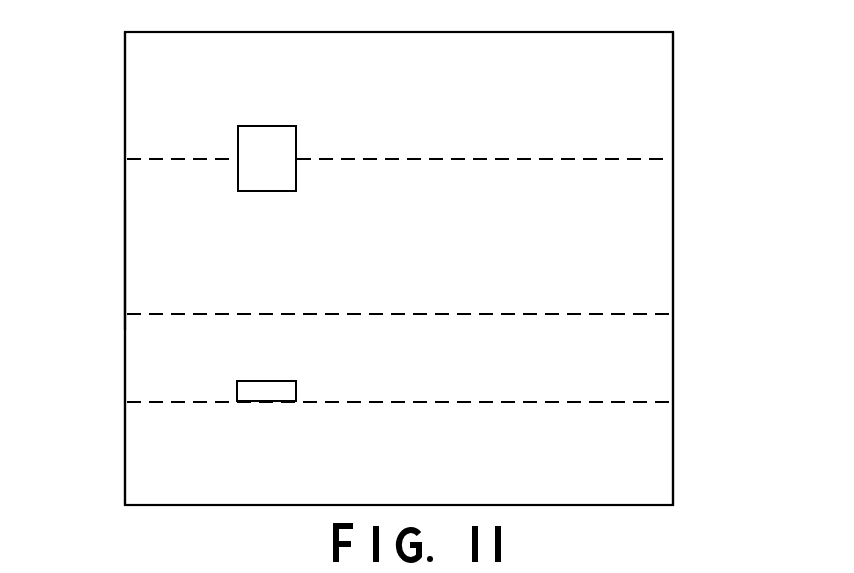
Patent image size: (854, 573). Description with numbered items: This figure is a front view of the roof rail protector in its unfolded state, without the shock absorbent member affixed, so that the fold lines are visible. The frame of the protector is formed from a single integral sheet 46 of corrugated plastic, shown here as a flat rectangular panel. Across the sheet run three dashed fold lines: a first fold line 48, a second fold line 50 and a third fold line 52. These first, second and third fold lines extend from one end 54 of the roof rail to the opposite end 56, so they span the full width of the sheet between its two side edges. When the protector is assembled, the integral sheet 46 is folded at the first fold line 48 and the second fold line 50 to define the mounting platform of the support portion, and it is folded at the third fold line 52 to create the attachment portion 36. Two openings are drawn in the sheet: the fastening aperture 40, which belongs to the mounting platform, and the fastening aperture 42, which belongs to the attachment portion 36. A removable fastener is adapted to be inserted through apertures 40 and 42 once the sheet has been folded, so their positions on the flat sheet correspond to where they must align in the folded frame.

The attachment portion 36 is at (630, 270).
The fastening aperture 40 is at (245, 395).
The fastening aperture 42 is at (263, 135).
The integral sheet 46 is at (138, 262).
The first fold line 48 is at (156, 402).
The second fold line 50 is at (143, 314).
The third fold line 52 is at (152, 159).
The end 54 is at (125, 107).
The opposite end 56 is at (673, 93).